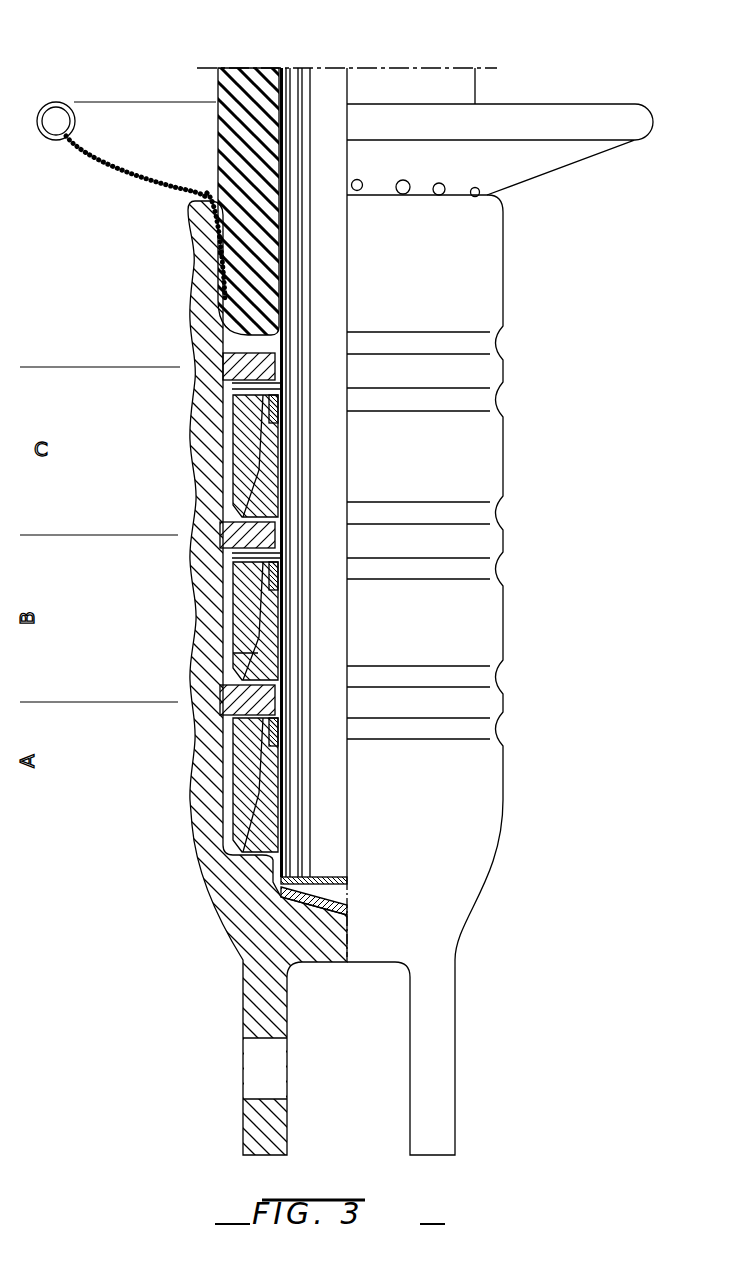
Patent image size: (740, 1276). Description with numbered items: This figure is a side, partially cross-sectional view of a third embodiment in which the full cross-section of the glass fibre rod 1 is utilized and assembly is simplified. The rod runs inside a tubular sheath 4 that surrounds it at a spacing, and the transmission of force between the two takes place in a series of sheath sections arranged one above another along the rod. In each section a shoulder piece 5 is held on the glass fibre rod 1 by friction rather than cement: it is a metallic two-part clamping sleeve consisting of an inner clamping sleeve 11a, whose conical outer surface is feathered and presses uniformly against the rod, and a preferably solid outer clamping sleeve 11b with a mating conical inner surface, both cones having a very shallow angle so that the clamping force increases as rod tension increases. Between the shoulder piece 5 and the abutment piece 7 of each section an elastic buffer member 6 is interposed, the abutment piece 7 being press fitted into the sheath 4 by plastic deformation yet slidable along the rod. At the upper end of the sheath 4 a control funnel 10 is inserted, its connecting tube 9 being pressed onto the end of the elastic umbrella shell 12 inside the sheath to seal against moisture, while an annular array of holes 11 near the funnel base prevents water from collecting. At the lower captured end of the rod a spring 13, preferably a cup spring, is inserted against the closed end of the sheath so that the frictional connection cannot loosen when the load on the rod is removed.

The glass fibre rod 1 is at (323, 128).
The tubular sheath 4 is at (205, 828).
The shoulder piece 5 is at (225, 447).
The elastic buffer member 6 is at (222, 390).
The abutment piece 7 is at (222, 527).
The connecting tube 9 is at (205, 236).
The control funnel 10 is at (122, 133).
The holes 11 is at (360, 183).
The inner clamping sleeve 11a is at (235, 652).
The outer clamping sleeve 11b is at (235, 597).
The umbrella shell 12 is at (232, 110).
The spring 13 is at (300, 905).